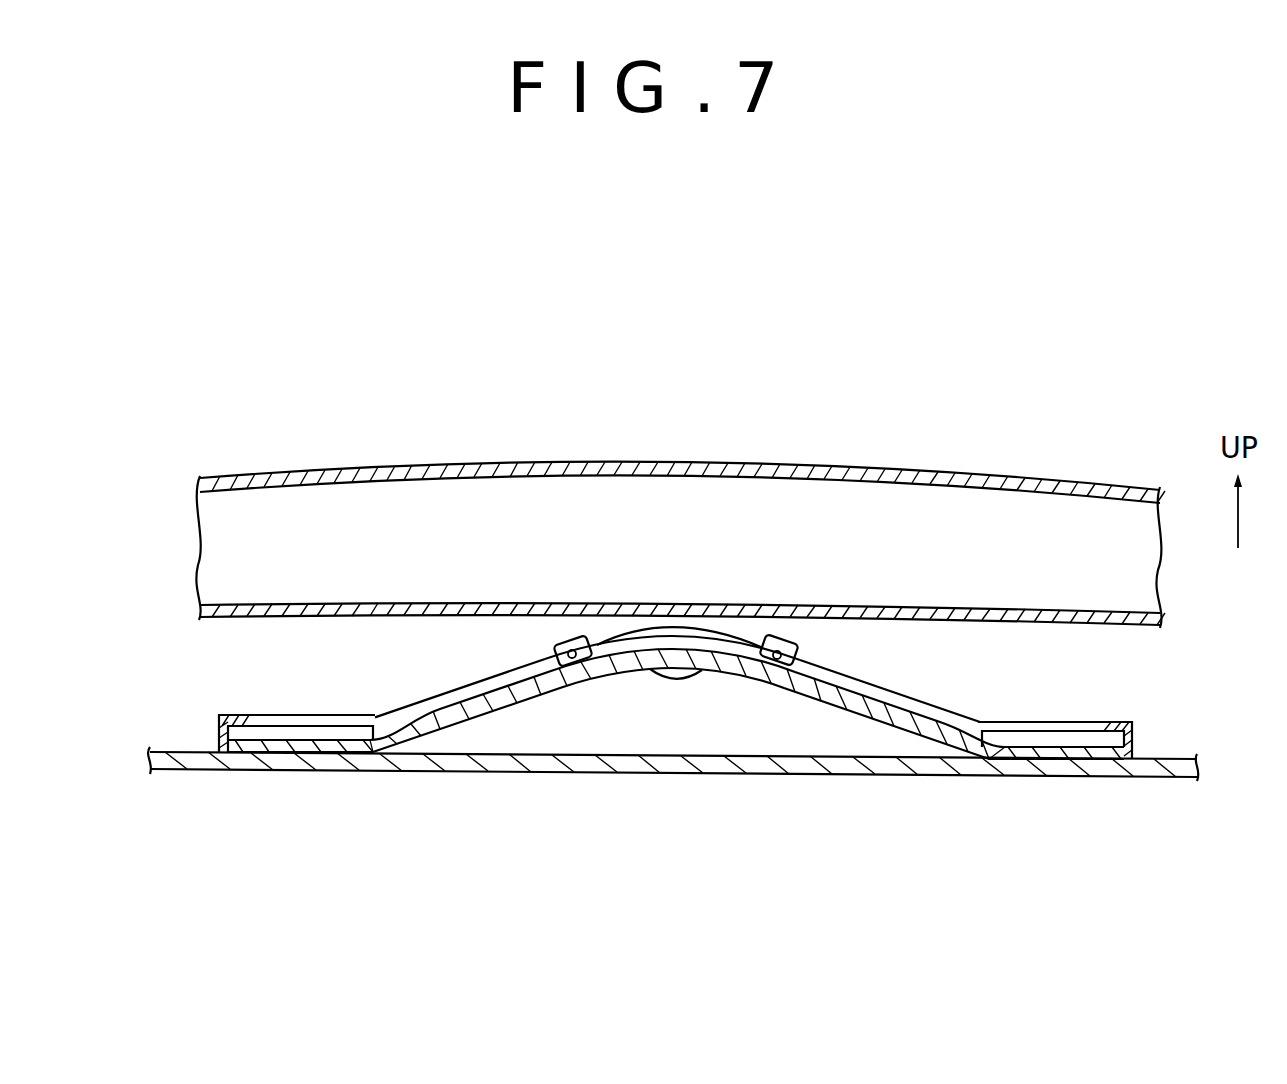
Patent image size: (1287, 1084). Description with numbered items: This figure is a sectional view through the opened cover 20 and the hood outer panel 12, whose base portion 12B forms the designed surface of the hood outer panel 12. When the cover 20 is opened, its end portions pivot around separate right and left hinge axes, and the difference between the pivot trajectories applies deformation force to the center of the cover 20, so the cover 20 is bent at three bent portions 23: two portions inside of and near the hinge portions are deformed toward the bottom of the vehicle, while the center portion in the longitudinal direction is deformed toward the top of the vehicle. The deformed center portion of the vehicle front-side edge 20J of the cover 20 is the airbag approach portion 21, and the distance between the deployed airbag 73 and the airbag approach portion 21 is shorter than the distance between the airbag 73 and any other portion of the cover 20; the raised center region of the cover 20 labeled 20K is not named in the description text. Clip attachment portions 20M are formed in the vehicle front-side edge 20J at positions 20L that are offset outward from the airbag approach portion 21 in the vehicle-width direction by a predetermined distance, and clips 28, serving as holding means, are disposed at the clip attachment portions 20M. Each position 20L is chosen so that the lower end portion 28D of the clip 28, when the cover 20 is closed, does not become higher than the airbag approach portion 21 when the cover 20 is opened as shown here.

The airbag 73 is at (994, 468).
The hood outer panel 12 is at (673, 785).
The base portion 12B is at (1163, 759).
The cover 20 is at (940, 683).
The vehicle front-side edge 20J is at (415, 690).
The apex portion of plate member 20K is at (672, 630).
The positions 20L is at (585, 667).
The clip attachment portions 20M is at (595, 633).
The airbag approach portion 21 is at (698, 628).
The bent portions 23 is at (373, 716).
The clips 28 is at (557, 647).
The lower end portion of the clip 28D is at (562, 640).